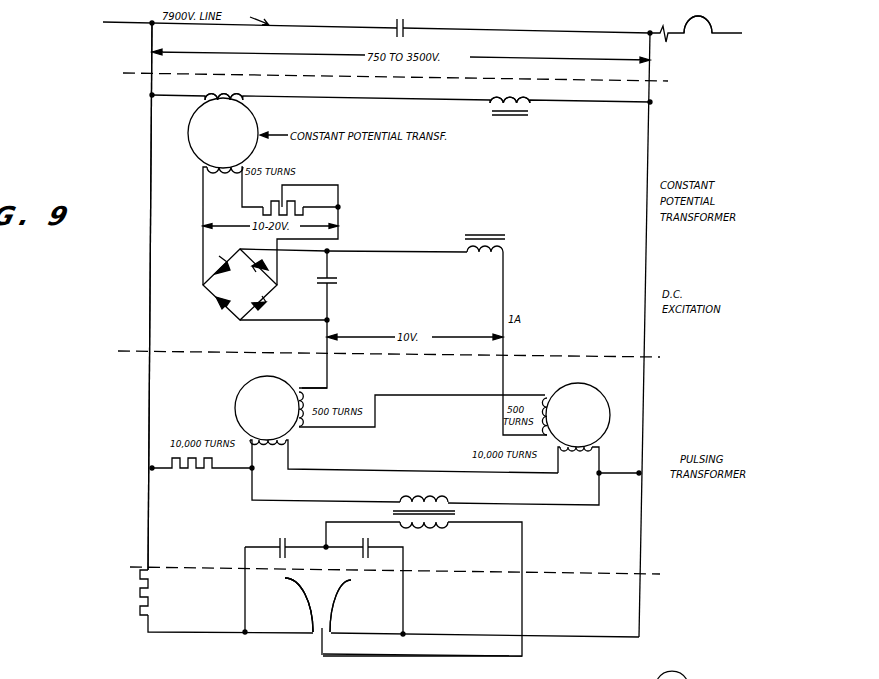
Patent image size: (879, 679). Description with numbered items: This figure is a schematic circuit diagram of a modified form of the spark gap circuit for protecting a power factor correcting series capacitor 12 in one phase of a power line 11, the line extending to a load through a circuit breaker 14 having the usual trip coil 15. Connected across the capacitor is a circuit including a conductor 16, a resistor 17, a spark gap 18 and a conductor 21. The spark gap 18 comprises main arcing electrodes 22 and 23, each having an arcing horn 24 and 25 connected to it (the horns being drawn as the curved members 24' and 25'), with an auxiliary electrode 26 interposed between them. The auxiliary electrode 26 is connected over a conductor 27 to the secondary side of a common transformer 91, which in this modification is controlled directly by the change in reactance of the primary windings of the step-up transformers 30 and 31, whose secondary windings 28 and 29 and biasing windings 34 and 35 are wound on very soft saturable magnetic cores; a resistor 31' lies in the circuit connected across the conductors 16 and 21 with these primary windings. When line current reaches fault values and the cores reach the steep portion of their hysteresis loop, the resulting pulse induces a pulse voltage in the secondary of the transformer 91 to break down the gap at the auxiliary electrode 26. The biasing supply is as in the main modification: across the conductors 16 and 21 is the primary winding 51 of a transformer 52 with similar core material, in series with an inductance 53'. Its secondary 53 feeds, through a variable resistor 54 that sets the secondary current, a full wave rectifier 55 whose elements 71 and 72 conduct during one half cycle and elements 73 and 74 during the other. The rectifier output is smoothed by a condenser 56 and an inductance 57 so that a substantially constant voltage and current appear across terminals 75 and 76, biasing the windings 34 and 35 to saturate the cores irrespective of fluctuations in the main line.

The power line 11 is at (138, 23).
The series capacitor 12 is at (404, 34).
The circuit breaker 14 is at (712, 22).
The trip coil 15 is at (663, 30).
The conductor 16 is at (149, 267).
The resistor 17 is at (156, 590).
The spark gap 18 is at (312, 606).
The conductor 21 is at (645, 343).
The electrode 22 is at (310, 628).
The electrode 23 is at (337, 625).
The arcing horn 24 is at (285, 547).
The electrode 24' is at (307, 604).
The arcing horn 25 is at (364, 581).
The electrode 25' is at (353, 606).
The auxiliary electrode 26 is at (321, 647).
The conductor 27 is at (445, 656).
The secondary winding 28 is at (574, 452).
The secondary winding 29 is at (266, 446).
The step-up transformer 30 is at (578, 388).
The step-up transformer 31 is at (253, 408).
The resistor 31' is at (202, 478).
The biasing winding 34 is at (306, 403).
The biasing winding 35 is at (544, 398).
The primary winding 51 is at (222, 93).
The transformer 52 is at (194, 151).
The secondary winding 53 is at (225, 182).
The inductance 53' is at (518, 100).
The variable resistor 54 is at (292, 205).
The full wave rectifier 55 is at (211, 288).
The smoothing condenser 56 is at (335, 275).
The inductance 57 is at (506, 252).
The rectifier element 71 is at (218, 262).
The rectifier element 72 is at (260, 306).
The rectifier element 73 is at (220, 305).
The rectifier element 74 is at (266, 268).
The output terminal 75 is at (330, 324).
The output terminal 76 is at (503, 296).
The common transformer 91 is at (430, 500).